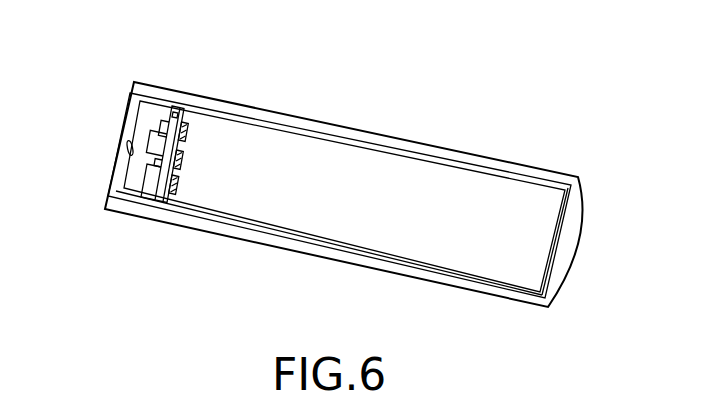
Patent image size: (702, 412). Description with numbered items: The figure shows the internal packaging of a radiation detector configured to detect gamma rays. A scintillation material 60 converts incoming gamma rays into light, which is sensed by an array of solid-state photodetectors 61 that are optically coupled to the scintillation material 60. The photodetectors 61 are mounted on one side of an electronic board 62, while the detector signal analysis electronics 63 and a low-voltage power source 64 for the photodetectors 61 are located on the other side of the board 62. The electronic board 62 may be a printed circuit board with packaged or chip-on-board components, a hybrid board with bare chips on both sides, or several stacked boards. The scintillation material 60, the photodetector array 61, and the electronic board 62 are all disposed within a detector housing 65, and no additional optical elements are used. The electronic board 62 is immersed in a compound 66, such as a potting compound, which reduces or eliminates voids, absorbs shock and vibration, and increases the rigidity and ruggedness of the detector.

The scintillation material 60 is at (533, 242).
The array of solid-state photodetectors 61 is at (192, 126).
The electronic board 62 is at (175, 110).
The detector signal analysis electronics 63 is at (167, 140).
The low-voltage power source 64 is at (152, 175).
The detector housing 65 is at (531, 172).
The compound 66 is at (130, 194).